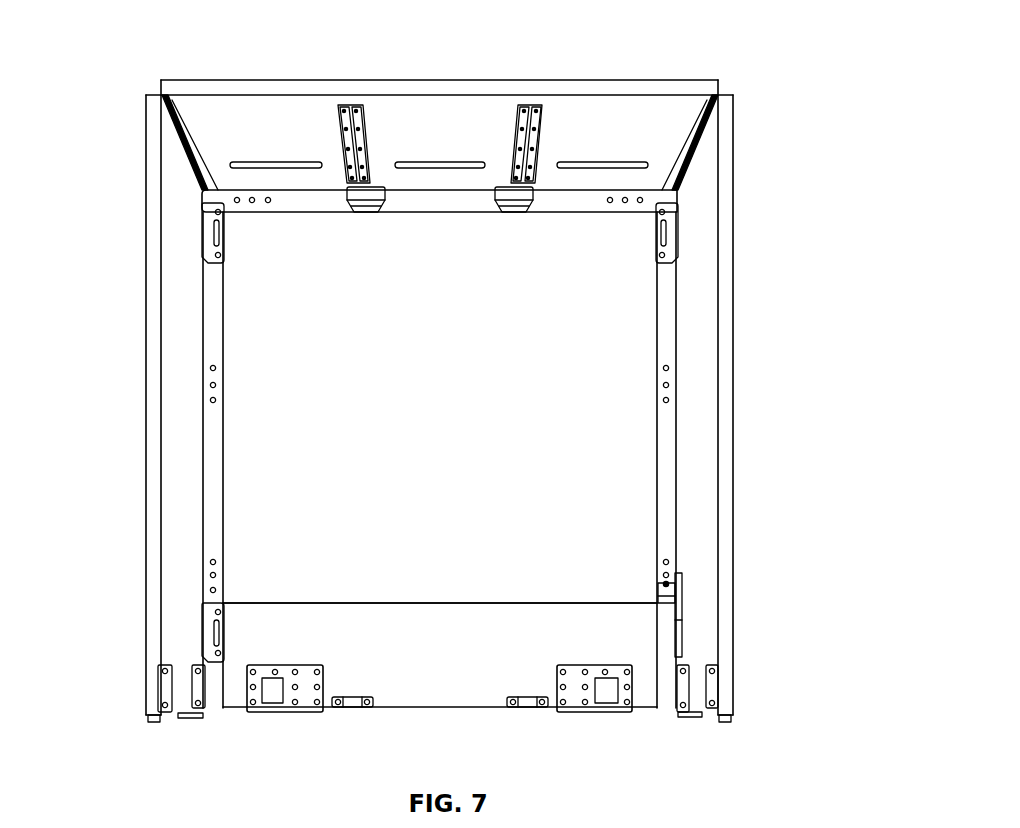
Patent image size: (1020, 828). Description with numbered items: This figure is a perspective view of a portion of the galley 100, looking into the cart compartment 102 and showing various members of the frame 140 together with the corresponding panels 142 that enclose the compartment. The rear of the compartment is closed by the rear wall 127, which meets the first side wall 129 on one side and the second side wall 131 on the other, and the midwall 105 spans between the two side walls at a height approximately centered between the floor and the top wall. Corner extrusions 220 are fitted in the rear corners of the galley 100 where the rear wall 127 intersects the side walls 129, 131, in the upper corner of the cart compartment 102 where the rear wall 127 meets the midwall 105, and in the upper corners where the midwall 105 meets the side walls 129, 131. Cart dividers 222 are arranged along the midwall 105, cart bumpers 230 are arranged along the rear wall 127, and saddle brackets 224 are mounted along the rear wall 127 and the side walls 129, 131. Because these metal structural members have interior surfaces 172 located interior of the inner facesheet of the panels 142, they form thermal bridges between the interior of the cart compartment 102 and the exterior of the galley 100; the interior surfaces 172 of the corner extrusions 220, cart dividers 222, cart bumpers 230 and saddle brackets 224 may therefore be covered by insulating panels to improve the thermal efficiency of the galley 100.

The galley 100 is at (752, 60).
The cart compartment 102 is at (696, 433).
The midwall 105 is at (600, 85).
The rear wall 127 is at (620, 370).
The first side wall 129 is at (728, 257).
The second side wall 131 is at (153, 297).
The frame 140 is at (215, 708).
The panel 142 is at (442, 110).
The interior surface 172 is at (525, 107).
The corner extrusion 220 is at (312, 200).
The cart divider 222 is at (363, 125).
The saddle bracket 224 is at (575, 692).
The cart bumper 230 is at (375, 183).